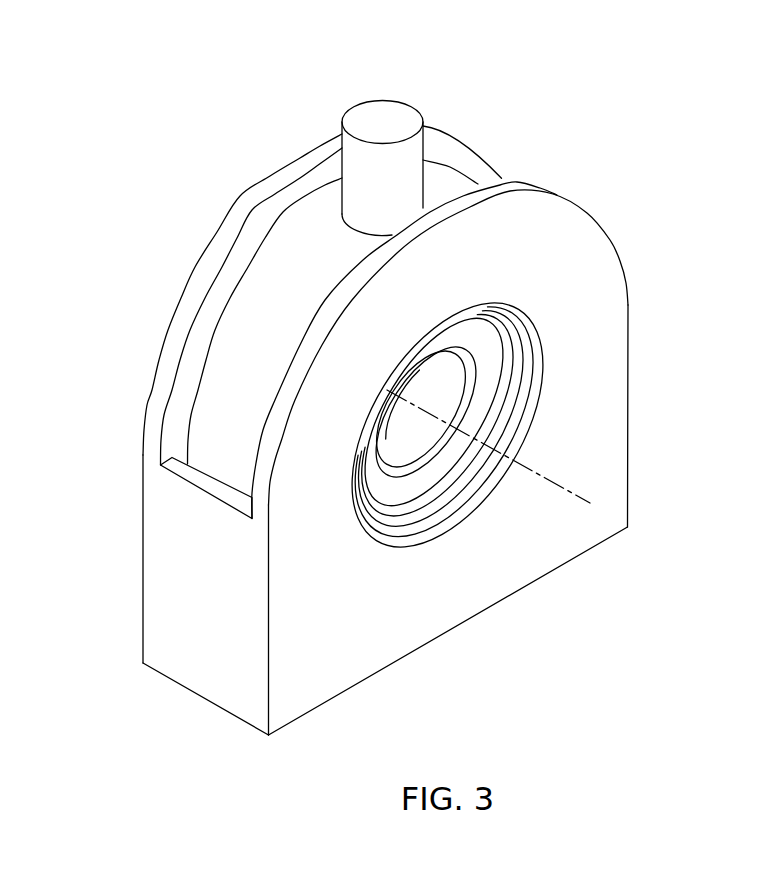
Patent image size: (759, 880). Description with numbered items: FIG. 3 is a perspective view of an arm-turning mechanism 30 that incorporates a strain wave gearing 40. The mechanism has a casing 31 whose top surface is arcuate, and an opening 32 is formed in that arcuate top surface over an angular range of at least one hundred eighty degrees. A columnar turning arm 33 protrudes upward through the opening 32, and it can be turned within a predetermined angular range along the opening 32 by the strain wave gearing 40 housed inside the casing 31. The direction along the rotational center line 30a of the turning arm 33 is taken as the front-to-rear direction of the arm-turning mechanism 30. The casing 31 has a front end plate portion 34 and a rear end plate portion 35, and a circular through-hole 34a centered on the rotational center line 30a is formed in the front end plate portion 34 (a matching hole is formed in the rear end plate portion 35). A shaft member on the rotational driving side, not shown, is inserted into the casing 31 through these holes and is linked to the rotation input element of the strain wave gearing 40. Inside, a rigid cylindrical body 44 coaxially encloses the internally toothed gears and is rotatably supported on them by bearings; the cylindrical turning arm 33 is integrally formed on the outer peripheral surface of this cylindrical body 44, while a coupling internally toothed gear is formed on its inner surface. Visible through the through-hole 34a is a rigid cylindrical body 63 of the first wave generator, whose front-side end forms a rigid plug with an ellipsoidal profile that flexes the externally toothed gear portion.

The arm-turning mechanism 30 is at (526, 127).
The rotational center line 30a is at (570, 494).
The casing 31 is at (628, 337).
The opening 32 is at (276, 207).
The turning arm 33 is at (340, 127).
The front end plate portion 34 is at (583, 286).
The through-hole 34a is at (431, 525).
The rear end plate portion 35 is at (153, 372).
The strain wave gearing 40 is at (271, 301).
The cylindrical body 44 is at (234, 411).
The rigid cylindrical body 63 is at (478, 383).